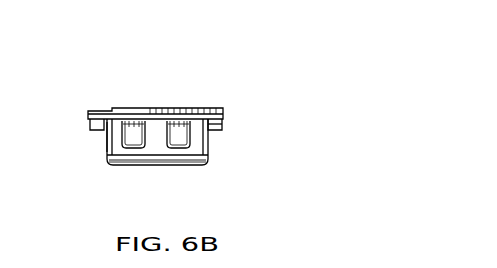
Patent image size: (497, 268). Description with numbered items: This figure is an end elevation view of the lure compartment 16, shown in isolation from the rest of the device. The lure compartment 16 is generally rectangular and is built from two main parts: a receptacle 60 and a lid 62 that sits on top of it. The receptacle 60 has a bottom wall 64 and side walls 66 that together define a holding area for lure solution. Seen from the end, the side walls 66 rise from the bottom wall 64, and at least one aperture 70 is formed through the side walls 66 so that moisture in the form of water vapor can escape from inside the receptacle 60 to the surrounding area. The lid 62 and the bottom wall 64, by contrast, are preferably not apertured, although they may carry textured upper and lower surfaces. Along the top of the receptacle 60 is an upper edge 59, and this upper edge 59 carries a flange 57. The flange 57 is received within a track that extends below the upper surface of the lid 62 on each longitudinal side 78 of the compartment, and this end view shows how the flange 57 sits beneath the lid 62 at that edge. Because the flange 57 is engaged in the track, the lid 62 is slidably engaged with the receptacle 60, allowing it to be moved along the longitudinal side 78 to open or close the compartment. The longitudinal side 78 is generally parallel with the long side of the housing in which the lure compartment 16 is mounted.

The lure compartment 16 is at (242, 73).
The flange 57 is at (206, 108).
The upper edge 59 is at (226, 129).
The receptacle 60 is at (213, 147).
The lid 62 is at (104, 107).
The bottom wall 64 is at (121, 168).
The side walls 66 is at (107, 141).
The aperture 70 is at (181, 146).
The longitudinal side 78 is at (228, 120).